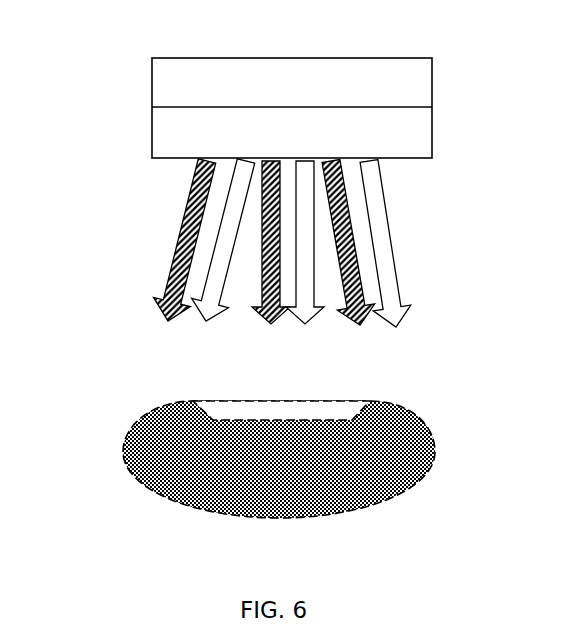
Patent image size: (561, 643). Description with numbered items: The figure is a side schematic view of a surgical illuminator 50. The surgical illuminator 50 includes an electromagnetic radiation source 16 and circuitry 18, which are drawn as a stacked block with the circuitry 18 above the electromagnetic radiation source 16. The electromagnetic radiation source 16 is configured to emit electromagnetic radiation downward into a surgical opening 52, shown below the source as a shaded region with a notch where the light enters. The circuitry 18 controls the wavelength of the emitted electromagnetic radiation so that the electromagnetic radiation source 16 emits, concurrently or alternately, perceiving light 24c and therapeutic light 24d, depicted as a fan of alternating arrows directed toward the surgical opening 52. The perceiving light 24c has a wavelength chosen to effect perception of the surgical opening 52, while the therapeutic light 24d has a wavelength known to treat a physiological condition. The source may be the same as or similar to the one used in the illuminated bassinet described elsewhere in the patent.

The surgical illuminator 50 is at (140, 87).
The circuitry 18 is at (354, 96).
The electromagnetic radiation source 16 is at (379, 142).
The therapeutic light 24d is at (192, 288).
The perceiving light 24c is at (344, 326).
The surgical opening 52 is at (333, 422).